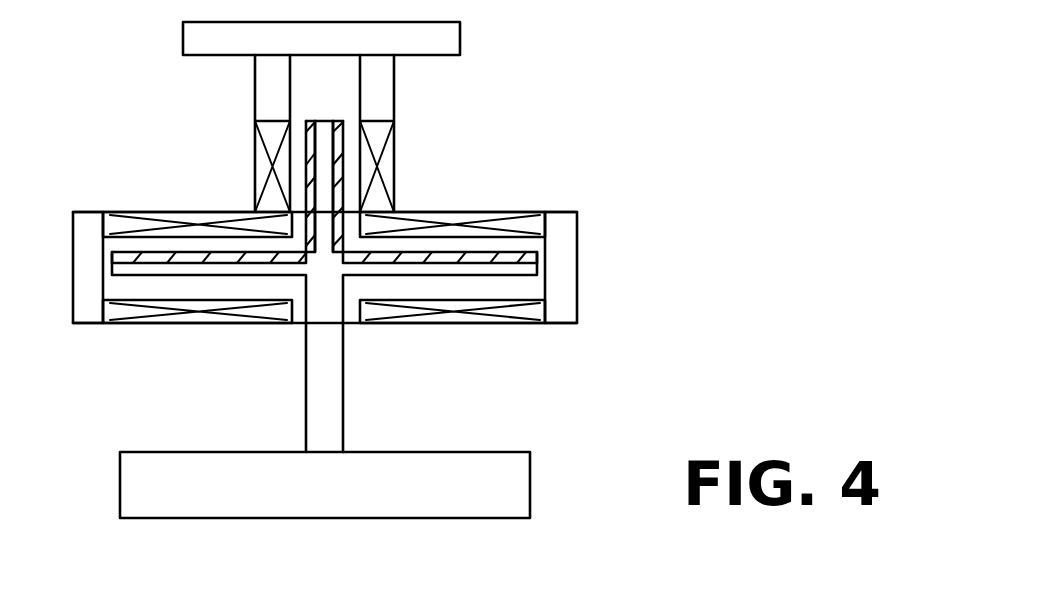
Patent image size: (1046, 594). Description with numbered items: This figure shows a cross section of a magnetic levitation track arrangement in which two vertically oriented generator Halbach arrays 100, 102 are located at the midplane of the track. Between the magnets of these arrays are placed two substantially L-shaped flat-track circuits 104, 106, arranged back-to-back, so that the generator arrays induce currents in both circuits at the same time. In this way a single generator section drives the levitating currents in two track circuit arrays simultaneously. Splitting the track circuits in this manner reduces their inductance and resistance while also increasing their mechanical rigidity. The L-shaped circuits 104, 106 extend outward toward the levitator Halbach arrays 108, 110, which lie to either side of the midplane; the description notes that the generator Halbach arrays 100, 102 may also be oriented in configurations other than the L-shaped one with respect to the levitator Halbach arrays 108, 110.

The generator Halbach array 100 is at (393, 142).
The generator Halbach array 102 is at (253, 145).
The L-shaped flat-track circuit 104 is at (303, 170).
The L-shaped flat-track circuit 106 is at (340, 186).
The levitator Halbach array 108 is at (138, 212).
The levitator Halbach array 110 is at (509, 211).